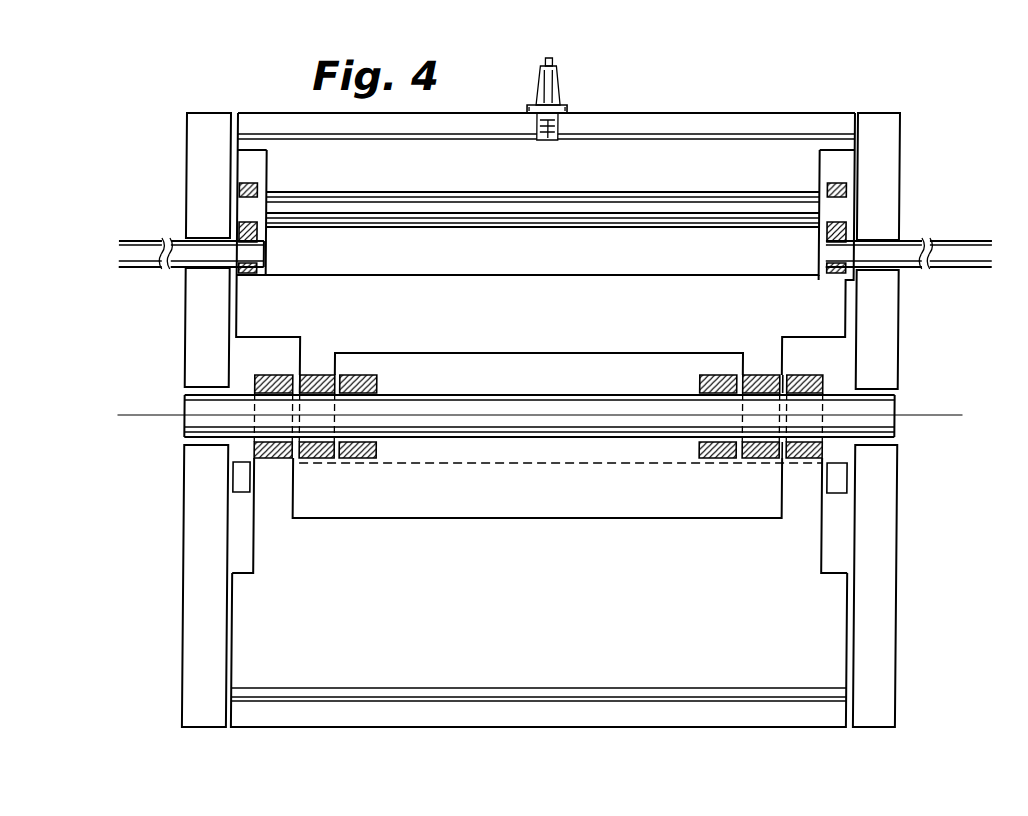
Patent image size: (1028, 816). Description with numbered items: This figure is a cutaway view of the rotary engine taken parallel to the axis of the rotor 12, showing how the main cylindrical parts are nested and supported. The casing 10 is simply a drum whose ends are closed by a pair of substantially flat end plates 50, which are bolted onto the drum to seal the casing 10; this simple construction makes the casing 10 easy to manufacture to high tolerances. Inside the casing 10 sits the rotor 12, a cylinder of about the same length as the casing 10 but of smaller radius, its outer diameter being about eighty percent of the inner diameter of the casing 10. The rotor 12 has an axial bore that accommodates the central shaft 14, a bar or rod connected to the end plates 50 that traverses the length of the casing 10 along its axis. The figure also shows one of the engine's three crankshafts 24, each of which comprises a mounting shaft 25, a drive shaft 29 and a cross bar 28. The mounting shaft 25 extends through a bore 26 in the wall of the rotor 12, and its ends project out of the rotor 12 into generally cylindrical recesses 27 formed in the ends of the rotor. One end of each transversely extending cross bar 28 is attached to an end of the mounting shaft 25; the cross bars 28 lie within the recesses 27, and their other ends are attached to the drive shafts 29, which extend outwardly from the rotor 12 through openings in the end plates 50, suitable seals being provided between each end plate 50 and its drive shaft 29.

The casing 10 is at (640, 716).
The rotor 12 is at (760, 160).
The central shaft 14 is at (899, 398).
The crankshaft 24 is at (200, 253).
The mounting shaft 25 is at (484, 203).
The bore 26 is at (549, 198).
The recess 27 is at (243, 163).
The cross bar 28 is at (242, 223).
The drive shaft 29 is at (905, 257).
The end plate 50 is at (188, 592).